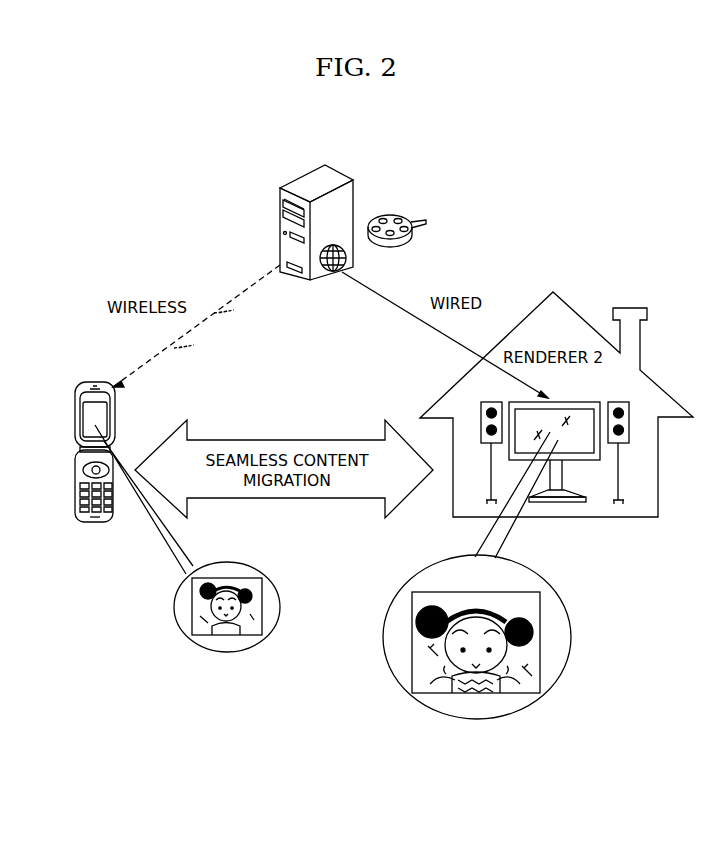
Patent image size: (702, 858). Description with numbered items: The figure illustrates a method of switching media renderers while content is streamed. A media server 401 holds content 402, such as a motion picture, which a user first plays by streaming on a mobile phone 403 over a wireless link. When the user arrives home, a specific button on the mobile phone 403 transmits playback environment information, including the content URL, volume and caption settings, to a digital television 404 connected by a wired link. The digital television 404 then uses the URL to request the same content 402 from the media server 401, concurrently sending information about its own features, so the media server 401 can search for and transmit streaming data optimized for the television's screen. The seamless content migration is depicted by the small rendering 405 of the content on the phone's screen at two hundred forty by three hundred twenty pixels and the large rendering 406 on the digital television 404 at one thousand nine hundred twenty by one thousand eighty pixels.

The media server 401 is at (352, 186).
The content 402 is at (393, 213).
The mobile phone 403 is at (113, 413).
The digital television (DTV) 404 is at (575, 400).
The content displayed at size 240x320 405 is at (227, 561).
The content displayed at size 1920x1080 406 is at (533, 570).